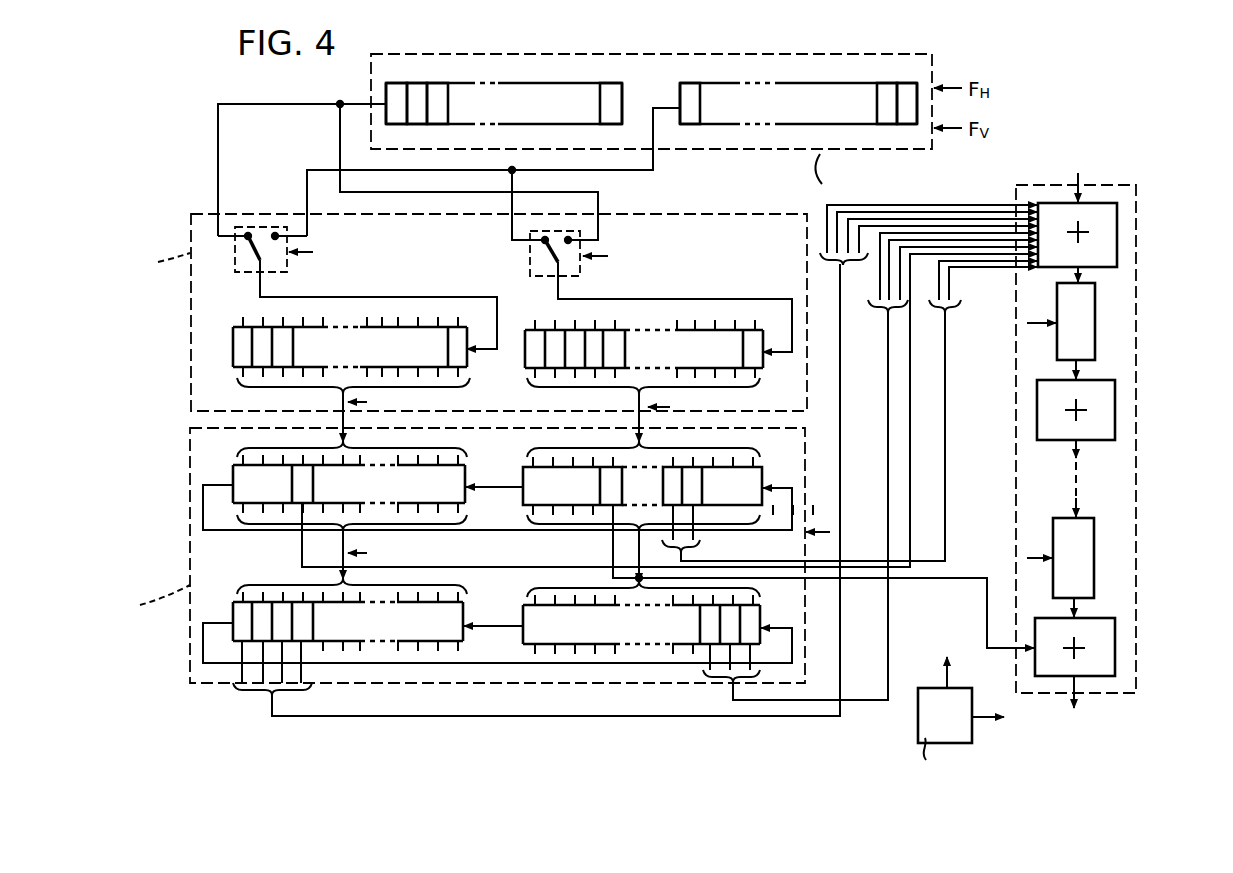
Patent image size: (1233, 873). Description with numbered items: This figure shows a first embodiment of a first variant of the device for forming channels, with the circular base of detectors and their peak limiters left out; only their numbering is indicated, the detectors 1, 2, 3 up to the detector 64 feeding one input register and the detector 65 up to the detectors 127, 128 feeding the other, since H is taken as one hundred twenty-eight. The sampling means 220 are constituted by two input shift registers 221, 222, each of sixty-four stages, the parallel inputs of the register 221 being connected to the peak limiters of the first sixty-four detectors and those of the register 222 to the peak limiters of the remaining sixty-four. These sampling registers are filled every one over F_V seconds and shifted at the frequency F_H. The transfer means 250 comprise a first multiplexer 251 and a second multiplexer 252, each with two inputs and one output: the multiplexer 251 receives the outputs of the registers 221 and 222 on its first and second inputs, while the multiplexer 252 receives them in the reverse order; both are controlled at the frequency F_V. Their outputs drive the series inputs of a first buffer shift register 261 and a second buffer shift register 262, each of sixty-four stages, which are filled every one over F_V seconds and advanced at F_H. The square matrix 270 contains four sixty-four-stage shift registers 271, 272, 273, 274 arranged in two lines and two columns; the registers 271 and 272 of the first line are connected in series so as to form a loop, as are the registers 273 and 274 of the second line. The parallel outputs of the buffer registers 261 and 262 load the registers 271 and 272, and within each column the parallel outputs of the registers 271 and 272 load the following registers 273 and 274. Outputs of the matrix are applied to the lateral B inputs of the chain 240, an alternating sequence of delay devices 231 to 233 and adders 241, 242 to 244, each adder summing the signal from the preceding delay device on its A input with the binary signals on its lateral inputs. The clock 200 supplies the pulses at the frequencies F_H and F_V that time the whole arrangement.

The detector 1 is at (398, 83).
The detector 2 is at (420, 83).
The detector 3 is at (440, 83).
The detector 64 is at (612, 83).
The detector 65 is at (692, 83).
The detector 127 is at (888, 83).
The detector 128 is at (910, 83).
The clock 200 is at (920, 728).
The sampling means 220 is at (698, 150).
The input shift register 221 is at (514, 77).
The input shift register 222 is at (827, 77).
The delay device 231 is at (1085, 330).
The delay device 233 is at (1085, 545).
The chain 240 is at (1137, 222).
The adder 241 is at (1108, 245).
The adder 242 is at (1105, 415).
The adder 244 is at (1105, 648).
The transfer means 250 is at (190, 333).
The multiplexer 251 is at (252, 272).
The multiplexer 252 is at (535, 276).
The buffer shift register 261 is at (233, 340).
The buffer shift register 262 is at (763, 355).
The square matrix 270 is at (190, 540).
The shift register 271 is at (233, 468).
The shift register 272 is at (783, 469).
The shift register 273 is at (233, 610).
The shift register 274 is at (523, 612).